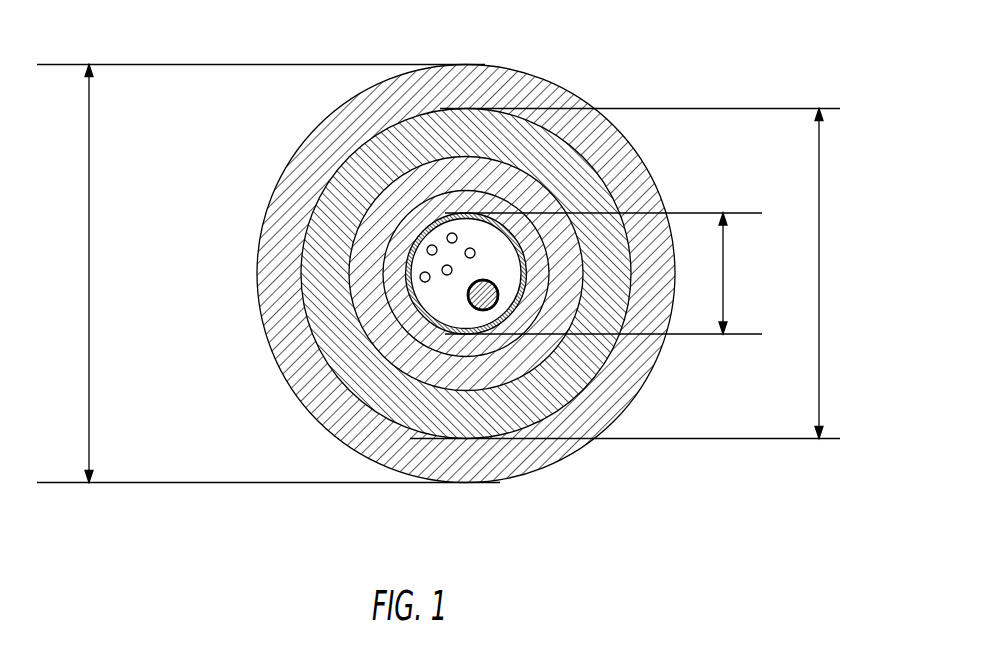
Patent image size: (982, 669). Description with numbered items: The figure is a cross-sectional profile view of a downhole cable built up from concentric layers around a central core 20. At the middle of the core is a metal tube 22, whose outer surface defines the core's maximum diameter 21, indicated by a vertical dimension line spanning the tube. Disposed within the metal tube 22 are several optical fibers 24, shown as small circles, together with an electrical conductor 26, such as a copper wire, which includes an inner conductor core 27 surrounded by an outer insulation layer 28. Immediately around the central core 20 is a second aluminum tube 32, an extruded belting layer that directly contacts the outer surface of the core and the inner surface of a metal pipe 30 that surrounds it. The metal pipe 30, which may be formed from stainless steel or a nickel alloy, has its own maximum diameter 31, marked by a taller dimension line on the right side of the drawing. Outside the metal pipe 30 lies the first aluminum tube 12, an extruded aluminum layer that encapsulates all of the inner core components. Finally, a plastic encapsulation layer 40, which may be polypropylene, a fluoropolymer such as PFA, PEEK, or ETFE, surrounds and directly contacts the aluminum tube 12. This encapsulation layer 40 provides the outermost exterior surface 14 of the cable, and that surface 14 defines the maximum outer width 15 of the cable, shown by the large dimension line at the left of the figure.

The encapsulation layer 40 is at (476, 67).
The outermost exterior surface 14 is at (270, 200).
The aluminum tube 12 is at (507, 123).
The metal pipe 30 is at (517, 163).
The second aluminum tube 32 is at (510, 200).
The metal tube 22 is at (518, 338).
The central core 20 is at (510, 262).
The electrical conductor 26 is at (441, 321).
The optical fibers 24 is at (423, 272).
The inner conductor core 27 is at (490, 308).
The outer insulation layer 28 is at (460, 309).
The maximum outer width 15 is at (89, 266).
The maximum diameter 31 is at (819, 262).
The maximum diameter 21 is at (723, 281).